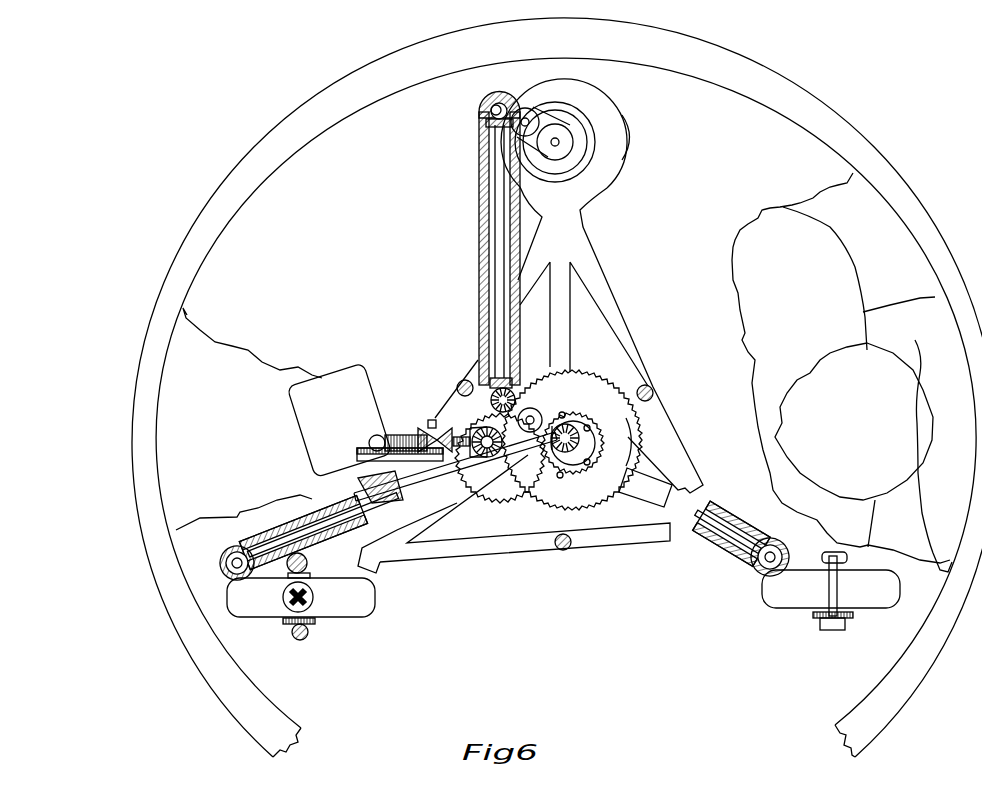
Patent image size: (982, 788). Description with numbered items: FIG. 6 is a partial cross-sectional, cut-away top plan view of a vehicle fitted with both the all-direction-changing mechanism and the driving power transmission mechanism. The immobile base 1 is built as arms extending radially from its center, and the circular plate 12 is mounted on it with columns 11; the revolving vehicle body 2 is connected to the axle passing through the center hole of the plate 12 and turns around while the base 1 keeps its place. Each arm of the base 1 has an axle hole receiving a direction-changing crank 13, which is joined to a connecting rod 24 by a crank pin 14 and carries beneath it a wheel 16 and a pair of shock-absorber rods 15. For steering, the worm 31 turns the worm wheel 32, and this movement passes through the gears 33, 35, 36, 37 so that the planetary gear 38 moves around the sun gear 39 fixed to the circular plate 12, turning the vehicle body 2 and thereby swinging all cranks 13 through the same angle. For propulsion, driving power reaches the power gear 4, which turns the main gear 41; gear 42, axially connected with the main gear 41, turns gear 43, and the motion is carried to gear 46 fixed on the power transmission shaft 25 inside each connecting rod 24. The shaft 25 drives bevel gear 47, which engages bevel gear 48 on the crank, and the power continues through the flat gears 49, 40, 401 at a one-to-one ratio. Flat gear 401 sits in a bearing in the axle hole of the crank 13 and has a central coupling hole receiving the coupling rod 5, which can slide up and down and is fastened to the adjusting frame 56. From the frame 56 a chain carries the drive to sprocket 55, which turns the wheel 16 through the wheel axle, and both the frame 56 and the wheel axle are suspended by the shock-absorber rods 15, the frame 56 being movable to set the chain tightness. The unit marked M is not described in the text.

The immobile base 1 is at (568, 242).
The revolving vehicle body 2 is at (205, 348).
The power gear 4 is at (590, 386).
The coupling rod 5 is at (307, 603).
The columns 11 is at (453, 387).
The circular plate 12 is at (590, 383).
The direction-changing crank 13 is at (477, 220).
The crank pin 14 is at (480, 118).
The shock-absorber rods 15 is at (307, 560).
The wheel 16 is at (632, 137).
The connecting rod 24 is at (477, 203).
The power transmission shaft 25 is at (477, 167).
The worm 31 is at (370, 440).
The worm wheel 32 is at (385, 435).
The gear 33 is at (360, 452).
The gear 35 is at (427, 424).
The gear 36 is at (463, 445).
The gear 37 is at (513, 460).
The planetary gear 38 is at (500, 483).
The sun gear 39 is at (585, 482).
The flat gear 40 is at (567, 133).
The flat gear 401 is at (535, 110).
The main gear 41 is at (606, 402).
The gear 42 is at (463, 383).
The gear 43 is at (480, 333).
The gear 46 is at (480, 363).
The bevel gear 47 is at (494, 128).
The bevel gear 48 is at (225, 570).
The flat gear 49 is at (477, 103).
The sprocket 55 is at (305, 627).
The adjusting frame 56 is at (833, 628).
The motor M is at (322, 370).